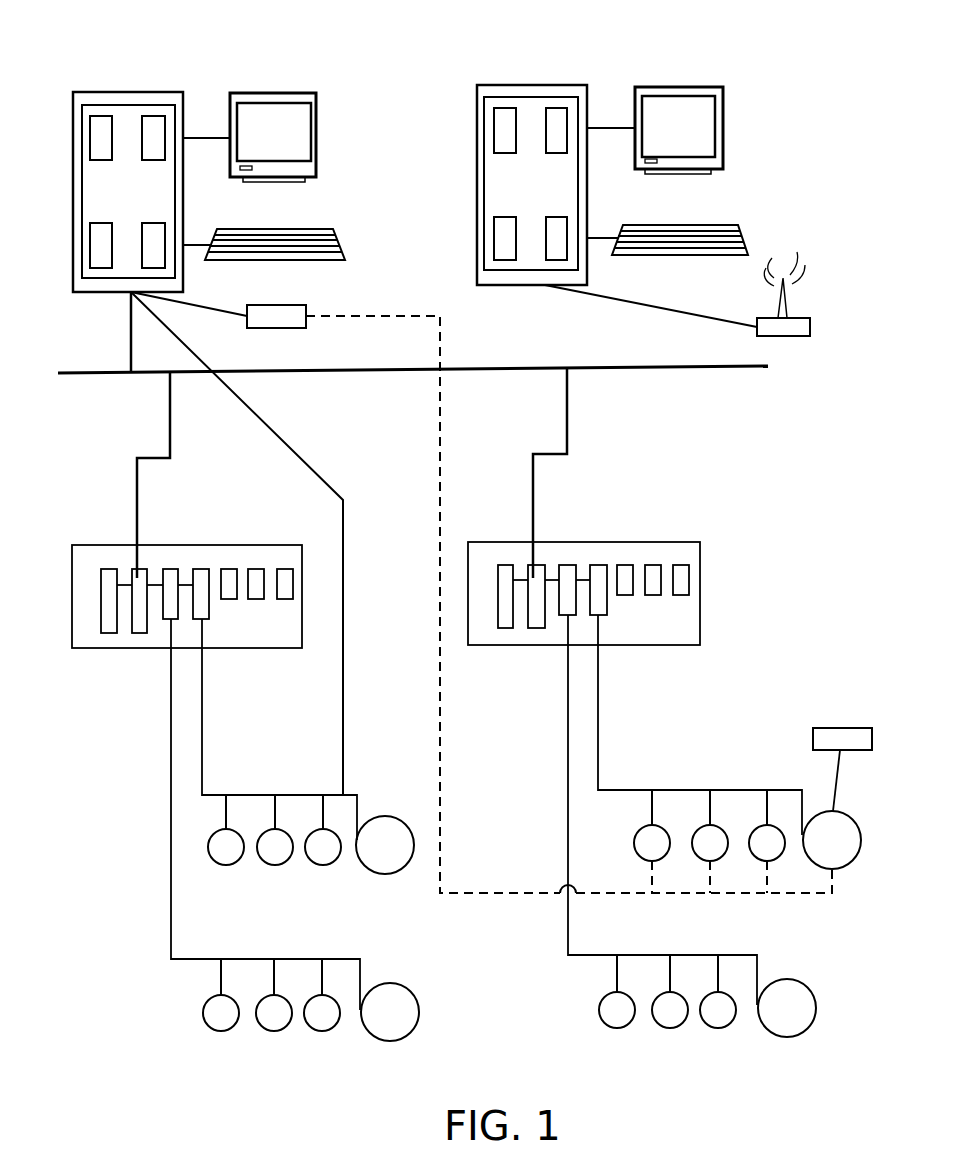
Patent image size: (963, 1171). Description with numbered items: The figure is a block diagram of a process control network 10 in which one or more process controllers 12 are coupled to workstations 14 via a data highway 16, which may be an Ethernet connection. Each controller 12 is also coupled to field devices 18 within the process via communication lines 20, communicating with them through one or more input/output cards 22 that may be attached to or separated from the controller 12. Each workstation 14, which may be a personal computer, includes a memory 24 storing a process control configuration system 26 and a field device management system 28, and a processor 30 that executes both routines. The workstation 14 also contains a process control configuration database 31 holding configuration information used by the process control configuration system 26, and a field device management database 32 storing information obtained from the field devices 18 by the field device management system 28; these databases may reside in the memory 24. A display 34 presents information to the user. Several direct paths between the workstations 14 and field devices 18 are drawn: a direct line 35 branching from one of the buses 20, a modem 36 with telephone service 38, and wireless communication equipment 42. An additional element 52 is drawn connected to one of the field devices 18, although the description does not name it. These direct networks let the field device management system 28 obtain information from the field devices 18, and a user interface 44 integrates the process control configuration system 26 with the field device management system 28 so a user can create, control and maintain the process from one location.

The process control network 10 is at (86, 433).
The process controller 12 is at (386, 570).
The workstation 14 is at (266, 67).
The data highway 16 is at (697, 366).
The field devices 18 is at (280, 899).
The communication lines 20 is at (202, 718).
The input/output cards 22 is at (193, 569).
The memory 24 is at (74, 126).
The process control configuration system 26 is at (98, 116).
The field device management system 28 is at (155, 116).
The processor 30 is at (74, 194).
The process control configuration database 31 is at (90, 249).
The field device management database 32 is at (165, 233).
The display 34 is at (317, 128).
The direct line 35 is at (343, 687).
The modem 36 is at (282, 328).
The telephone service 38 is at (492, 893).
The wireless communication equipment 42 is at (788, 336).
The user interface 44 is at (56, 75).
The sensor 52 is at (840, 728).